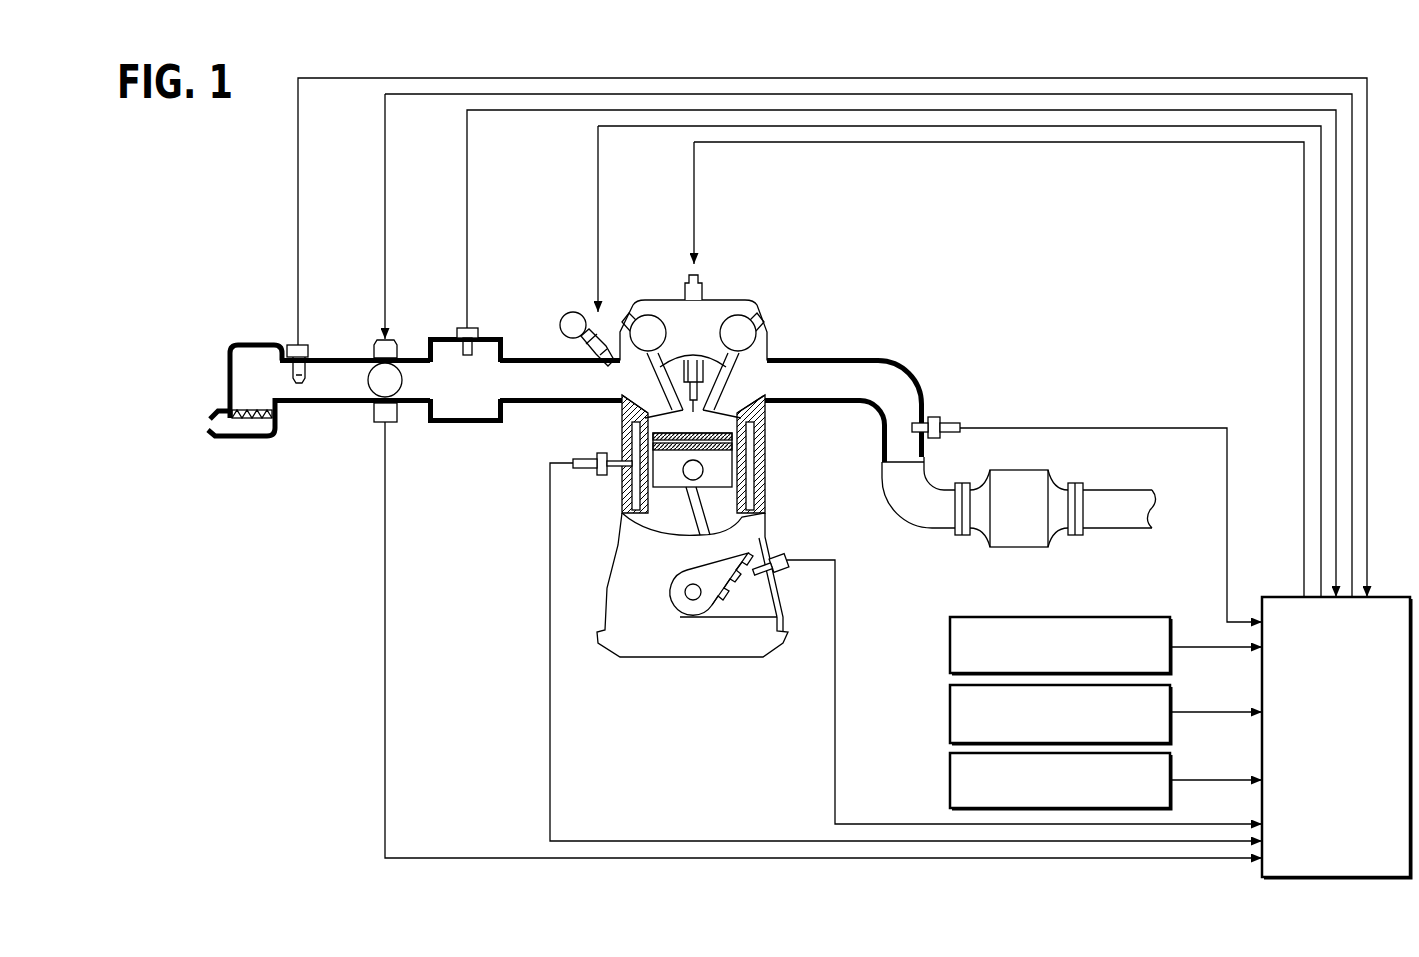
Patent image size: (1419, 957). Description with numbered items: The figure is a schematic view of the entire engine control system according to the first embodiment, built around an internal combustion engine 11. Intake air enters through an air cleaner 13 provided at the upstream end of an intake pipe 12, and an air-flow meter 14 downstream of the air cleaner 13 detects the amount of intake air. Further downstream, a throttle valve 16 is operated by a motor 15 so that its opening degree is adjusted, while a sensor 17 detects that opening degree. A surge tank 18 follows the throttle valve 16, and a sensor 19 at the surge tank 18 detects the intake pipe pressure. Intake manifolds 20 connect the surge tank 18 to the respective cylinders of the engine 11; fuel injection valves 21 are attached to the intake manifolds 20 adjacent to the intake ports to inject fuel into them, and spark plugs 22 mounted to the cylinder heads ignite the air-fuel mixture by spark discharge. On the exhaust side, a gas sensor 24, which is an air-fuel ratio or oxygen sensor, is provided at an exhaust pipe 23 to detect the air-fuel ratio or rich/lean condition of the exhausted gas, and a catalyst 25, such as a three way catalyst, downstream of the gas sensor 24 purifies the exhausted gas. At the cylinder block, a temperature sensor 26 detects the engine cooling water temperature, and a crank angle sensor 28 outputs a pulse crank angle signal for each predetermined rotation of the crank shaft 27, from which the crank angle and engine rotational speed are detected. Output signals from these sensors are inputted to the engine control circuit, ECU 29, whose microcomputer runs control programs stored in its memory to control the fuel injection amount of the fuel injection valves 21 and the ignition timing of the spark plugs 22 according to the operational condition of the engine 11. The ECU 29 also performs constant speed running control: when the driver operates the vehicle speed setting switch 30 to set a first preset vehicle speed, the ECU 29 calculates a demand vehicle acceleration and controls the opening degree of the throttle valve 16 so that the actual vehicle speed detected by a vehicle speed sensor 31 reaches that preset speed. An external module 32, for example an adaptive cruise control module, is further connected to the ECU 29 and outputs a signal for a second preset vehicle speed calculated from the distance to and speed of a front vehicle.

The internal combustion engine 11 is at (742, 298).
The intake pipe 12 is at (338, 358).
The air cleaner 13 is at (252, 418).
The air-flow meter 14 is at (292, 343).
The motor 15 is at (374, 342).
The throttle valve 16 is at (376, 382).
The sensor 17 is at (392, 422).
The surge tank 18 is at (463, 422).
The sensor 19 is at (476, 327).
The intake manifold 20 is at (529, 357).
The fuel injection valve 21 is at (556, 352).
The spark plug 22 is at (700, 395).
The exhaust pipe 23 is at (870, 357).
The gas sensor 24 is at (936, 416).
The catalyst 25 is at (1017, 472).
The temperature sensor 26 is at (603, 476).
The crank shaft 27 is at (693, 600).
The crank angle sensor 28 is at (782, 552).
The engine control circuit (ECU) 29 is at (1389, 596).
The vehicle speed setting switch 30 is at (950, 714).
The vehicle speed sensor 31 is at (950, 647).
The external module 32 is at (950, 781).